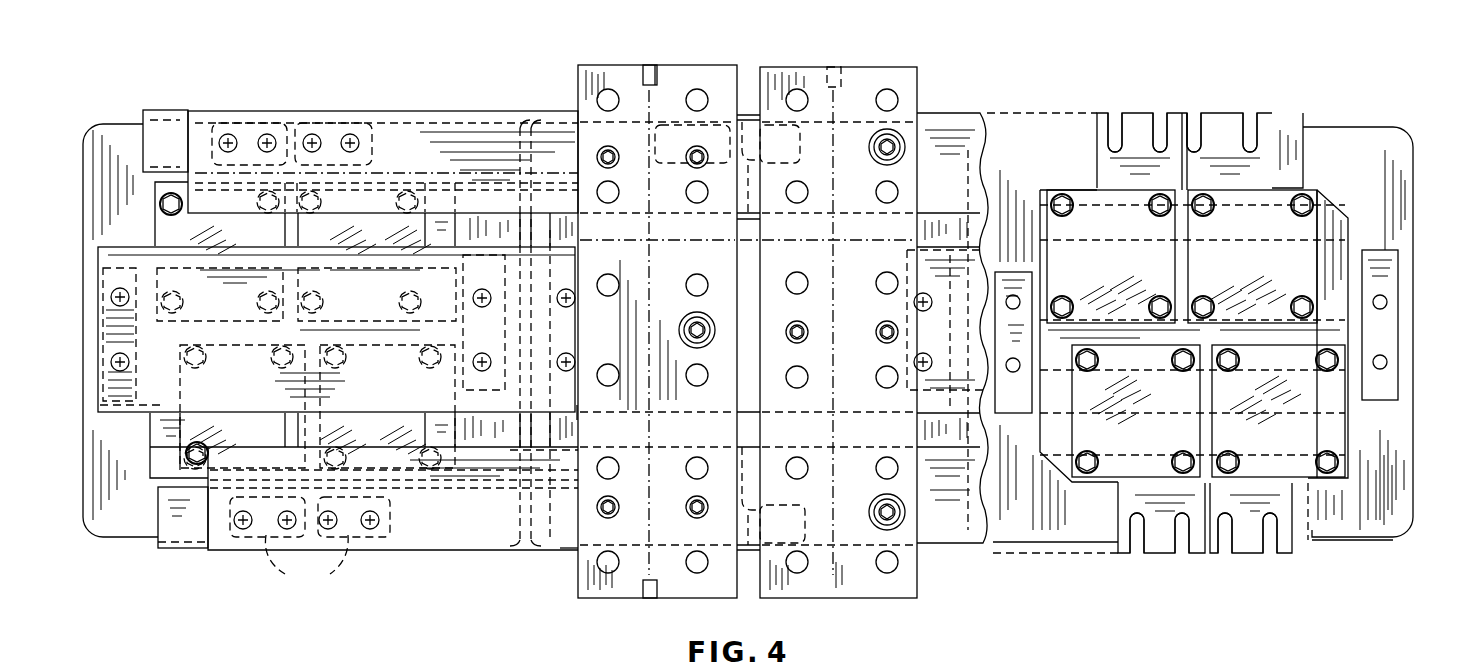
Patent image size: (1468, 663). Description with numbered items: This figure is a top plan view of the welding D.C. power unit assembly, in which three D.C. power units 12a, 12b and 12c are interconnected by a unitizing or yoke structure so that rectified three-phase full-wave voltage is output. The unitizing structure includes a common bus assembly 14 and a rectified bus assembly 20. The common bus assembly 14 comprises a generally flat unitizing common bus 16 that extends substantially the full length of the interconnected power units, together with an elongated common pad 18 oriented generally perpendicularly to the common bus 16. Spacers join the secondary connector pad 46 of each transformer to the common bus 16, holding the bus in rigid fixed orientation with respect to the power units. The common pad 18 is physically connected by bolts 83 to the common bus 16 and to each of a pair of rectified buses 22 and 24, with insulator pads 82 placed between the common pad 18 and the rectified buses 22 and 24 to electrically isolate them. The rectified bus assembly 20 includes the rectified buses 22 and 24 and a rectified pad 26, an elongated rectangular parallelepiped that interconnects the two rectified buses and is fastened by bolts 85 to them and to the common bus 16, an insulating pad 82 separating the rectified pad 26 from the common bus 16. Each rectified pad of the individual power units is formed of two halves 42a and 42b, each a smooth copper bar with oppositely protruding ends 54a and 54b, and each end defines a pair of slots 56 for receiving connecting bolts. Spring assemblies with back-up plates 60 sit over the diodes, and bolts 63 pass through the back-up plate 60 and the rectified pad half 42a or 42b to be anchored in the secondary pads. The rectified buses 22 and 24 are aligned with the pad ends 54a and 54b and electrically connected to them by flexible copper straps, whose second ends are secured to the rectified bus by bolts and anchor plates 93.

The D.C. power unit 12a is at (138, 542).
The D.C. power unit 12b is at (573, 550).
The D.C. power unit 12c is at (1330, 546).
The common bus assembly 14 is at (932, 113).
The unitizing common bus 16 is at (168, 402).
The common pad 18 is at (775, 82).
The rectified bus assembly 20 is at (576, 108).
The rectified bus 22 is at (521, 545).
The rectified bus 24 is at (522, 128).
The rectified pad 26 is at (668, 80).
The rectified pad half 42a is at (1352, 216).
The rectified pad half 42b is at (1043, 192).
The secondary connector pad 46 is at (1025, 401).
The pad end 54a is at (1142, 130).
The pad end 54b is at (1170, 555).
The slot 56 is at (1115, 135).
The back-up plate 60 is at (1120, 280).
The bolt 63 is at (1072, 300).
The insulator pad 82 is at (576, 420).
The bolt 83 is at (880, 153).
The bolt 85 is at (614, 148).
The anchor plate 93 is at (306, 561).